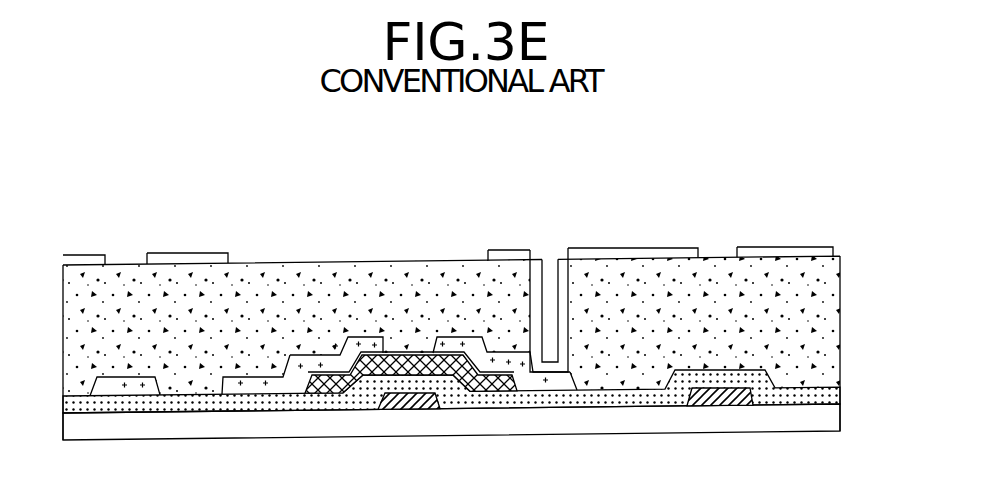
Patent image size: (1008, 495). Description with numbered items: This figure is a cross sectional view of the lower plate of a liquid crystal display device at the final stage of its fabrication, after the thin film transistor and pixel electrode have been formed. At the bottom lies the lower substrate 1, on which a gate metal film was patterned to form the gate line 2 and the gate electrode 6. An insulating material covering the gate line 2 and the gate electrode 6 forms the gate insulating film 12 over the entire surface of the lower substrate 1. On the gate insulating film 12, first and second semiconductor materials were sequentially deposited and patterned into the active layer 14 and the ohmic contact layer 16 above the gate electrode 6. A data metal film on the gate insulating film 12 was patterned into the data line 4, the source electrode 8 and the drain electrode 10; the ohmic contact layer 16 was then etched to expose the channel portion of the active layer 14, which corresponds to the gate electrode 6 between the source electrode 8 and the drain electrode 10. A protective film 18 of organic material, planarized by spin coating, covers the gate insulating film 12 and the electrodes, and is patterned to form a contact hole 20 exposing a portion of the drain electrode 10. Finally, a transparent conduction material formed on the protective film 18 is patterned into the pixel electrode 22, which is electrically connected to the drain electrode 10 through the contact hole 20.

The lower substrate 1 is at (823, 424).
The gate line 2 is at (727, 402).
The data line 4 is at (132, 395).
The gate electrode 6 is at (412, 409).
The source electrode 8 is at (360, 333).
The drain electrode 10 is at (533, 373).
The gate insulating film 12 is at (837, 392).
The active layer 14 is at (343, 393).
The ohmic contact layer 16 is at (482, 393).
The protective film 18 is at (837, 327).
The contact hole 20 is at (550, 265).
The pixel electrode 22 is at (837, 252).